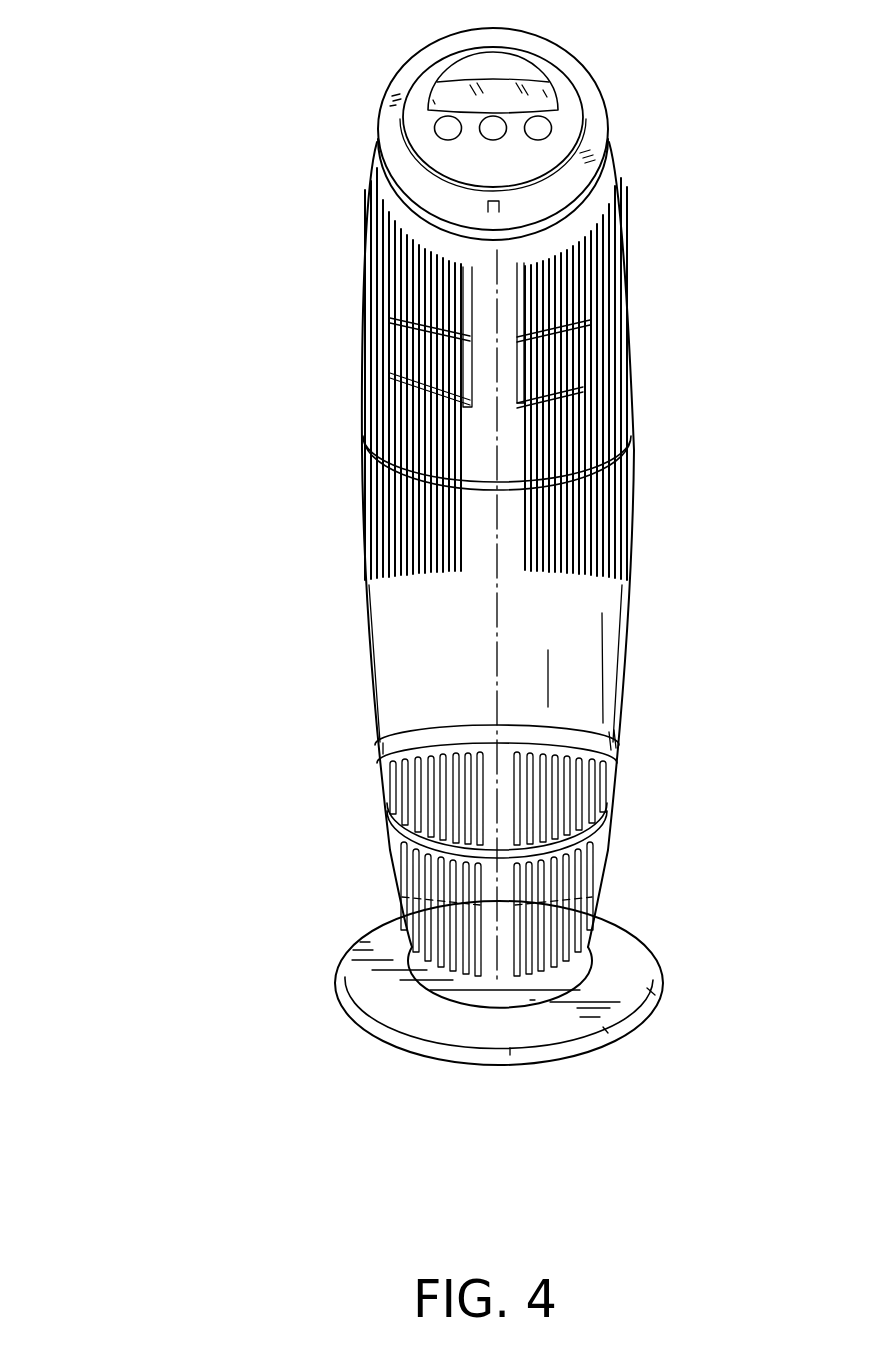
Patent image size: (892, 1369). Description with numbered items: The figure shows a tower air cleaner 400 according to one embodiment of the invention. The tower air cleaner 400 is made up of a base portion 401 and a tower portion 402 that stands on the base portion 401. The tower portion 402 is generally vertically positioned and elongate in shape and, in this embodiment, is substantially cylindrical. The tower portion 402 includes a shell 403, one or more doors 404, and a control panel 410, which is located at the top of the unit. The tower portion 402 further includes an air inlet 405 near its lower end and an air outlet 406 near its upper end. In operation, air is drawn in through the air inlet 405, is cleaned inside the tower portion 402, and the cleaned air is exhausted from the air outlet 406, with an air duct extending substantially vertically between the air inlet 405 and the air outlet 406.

The tower air cleaner 400 is at (427, 631).
The base portion 401 is at (355, 1005).
The tower portion 402 is at (427, 516).
The shell 403 is at (372, 196).
The doors 404 is at (612, 652).
The air inlet 405 is at (535, 864).
The air outlet 406 is at (623, 178).
The control panel 410 is at (572, 67).